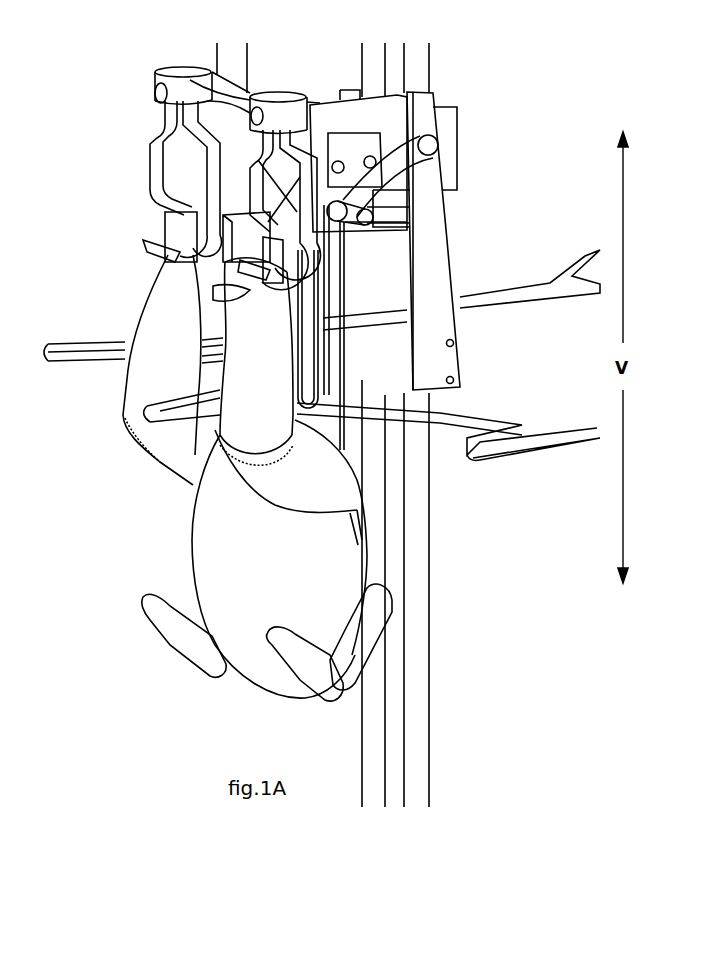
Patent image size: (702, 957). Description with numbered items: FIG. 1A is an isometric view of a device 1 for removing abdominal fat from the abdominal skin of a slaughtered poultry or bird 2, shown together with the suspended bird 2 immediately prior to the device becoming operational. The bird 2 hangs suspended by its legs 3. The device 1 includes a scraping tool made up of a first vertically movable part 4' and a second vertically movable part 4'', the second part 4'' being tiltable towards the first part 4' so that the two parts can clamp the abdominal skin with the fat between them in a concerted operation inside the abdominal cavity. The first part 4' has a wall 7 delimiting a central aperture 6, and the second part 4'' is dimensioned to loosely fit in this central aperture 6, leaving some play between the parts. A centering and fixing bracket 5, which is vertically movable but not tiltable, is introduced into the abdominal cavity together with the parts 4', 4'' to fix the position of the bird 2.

The device 1 is at (494, 213).
The slaughtered poultry or bird 2 is at (191, 570).
The legs 3 is at (256, 330).
The first vertically movable part 4' is at (170, 217).
The second vertically movable part 4'' is at (187, 269).
The centering and fixing bracket 5 is at (327, 367).
The central aperture 6 is at (279, 182).
The wall 7 is at (236, 250).